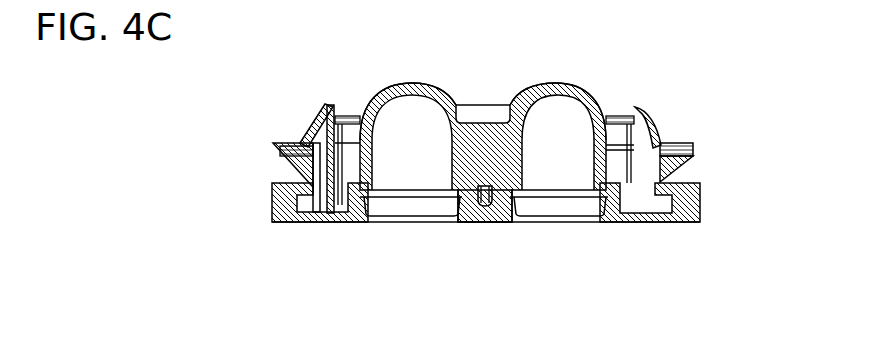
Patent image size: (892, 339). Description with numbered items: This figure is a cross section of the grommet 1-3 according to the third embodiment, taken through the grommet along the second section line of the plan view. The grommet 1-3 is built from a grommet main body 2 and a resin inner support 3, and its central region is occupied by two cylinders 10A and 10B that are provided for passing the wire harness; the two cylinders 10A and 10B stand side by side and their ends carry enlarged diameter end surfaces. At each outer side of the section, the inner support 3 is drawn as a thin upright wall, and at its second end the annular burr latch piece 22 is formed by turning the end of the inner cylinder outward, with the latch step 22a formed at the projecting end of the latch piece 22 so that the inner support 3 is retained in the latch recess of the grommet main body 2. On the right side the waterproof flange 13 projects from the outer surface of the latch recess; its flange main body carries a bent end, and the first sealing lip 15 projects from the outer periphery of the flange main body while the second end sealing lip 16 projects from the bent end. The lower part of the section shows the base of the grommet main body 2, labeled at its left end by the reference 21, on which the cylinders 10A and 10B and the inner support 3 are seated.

The grommet 1-3 is at (298, 297).
The grommet main body 2 is at (619, 236).
The resin inner support 3 is at (329, 105).
The cylinder 10A is at (568, 84).
The cylinder 10B is at (428, 86).
The waterproof flange 13 is at (690, 163).
The first sealing lip 15 is at (666, 143).
The second end sealing lip 16 is at (689, 147).
The base portion 21 is at (272, 216).
The latch piece 22 is at (305, 141).
The latch step 22a is at (294, 142).